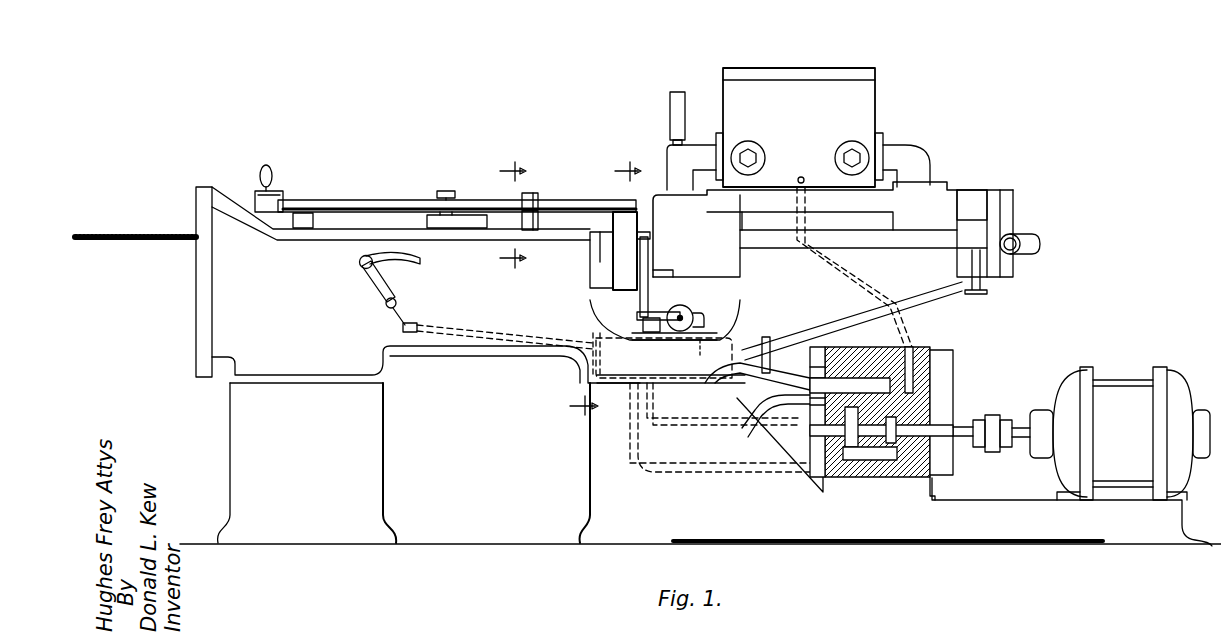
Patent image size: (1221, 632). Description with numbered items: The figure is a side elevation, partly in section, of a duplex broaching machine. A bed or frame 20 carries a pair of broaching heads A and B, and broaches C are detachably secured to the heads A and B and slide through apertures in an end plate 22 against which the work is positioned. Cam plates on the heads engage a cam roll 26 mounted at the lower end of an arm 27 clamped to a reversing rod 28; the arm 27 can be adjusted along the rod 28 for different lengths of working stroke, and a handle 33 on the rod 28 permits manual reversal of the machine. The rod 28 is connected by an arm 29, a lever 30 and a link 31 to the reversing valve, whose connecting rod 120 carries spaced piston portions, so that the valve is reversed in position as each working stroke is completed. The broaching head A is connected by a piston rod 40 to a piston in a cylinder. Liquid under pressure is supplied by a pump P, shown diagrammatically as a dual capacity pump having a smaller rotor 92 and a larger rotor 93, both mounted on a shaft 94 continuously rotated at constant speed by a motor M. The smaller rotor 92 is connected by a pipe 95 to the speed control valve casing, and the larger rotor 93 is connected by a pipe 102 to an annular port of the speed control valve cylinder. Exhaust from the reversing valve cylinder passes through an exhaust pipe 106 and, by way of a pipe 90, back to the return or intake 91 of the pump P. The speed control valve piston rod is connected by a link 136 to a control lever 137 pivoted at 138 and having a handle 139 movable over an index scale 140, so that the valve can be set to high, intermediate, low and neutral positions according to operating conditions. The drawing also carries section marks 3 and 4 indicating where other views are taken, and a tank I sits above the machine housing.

The broaches C is at (152, 234).
The end plate 22 is at (196, 272).
The bed or frame 20 is at (205, 312).
The reversing rod 28 is at (372, 206).
The handle 33 is at (272, 178).
The broaching head A is at (303, 220).
The broaching head B is at (462, 220).
The arm 27 is at (537, 205).
The cam roll 26 is at (538, 238).
The section line 4- 4 is at (520, 217).
The section line 3- 3 is at (614, 290).
The piston rod 40 is at (598, 256).
The arm 29 is at (644, 226).
The reservoir I is at (781, 85).
The lever 30 is at (646, 259).
The link 31 is at (657, 318).
The connecting rod 120 is at (680, 318).
The exhaust pipe 106 is at (706, 334).
The pipe 90 is at (632, 440).
The pipe 95 is at (789, 381).
The pipe 102 is at (768, 420).
The pump P is at (927, 352).
The larger rotor 93 is at (845, 447).
The smaller rotor 92 is at (896, 443).
The return or intake 91 is at (870, 460).
The shaft 94 is at (965, 437).
The motor M is at (1115, 434).
The handle 139 is at (359, 262).
The index scale 140 is at (421, 264).
The control lever 137 is at (378, 286).
The pivot 138 is at (396, 305).
The link 136 is at (480, 338).